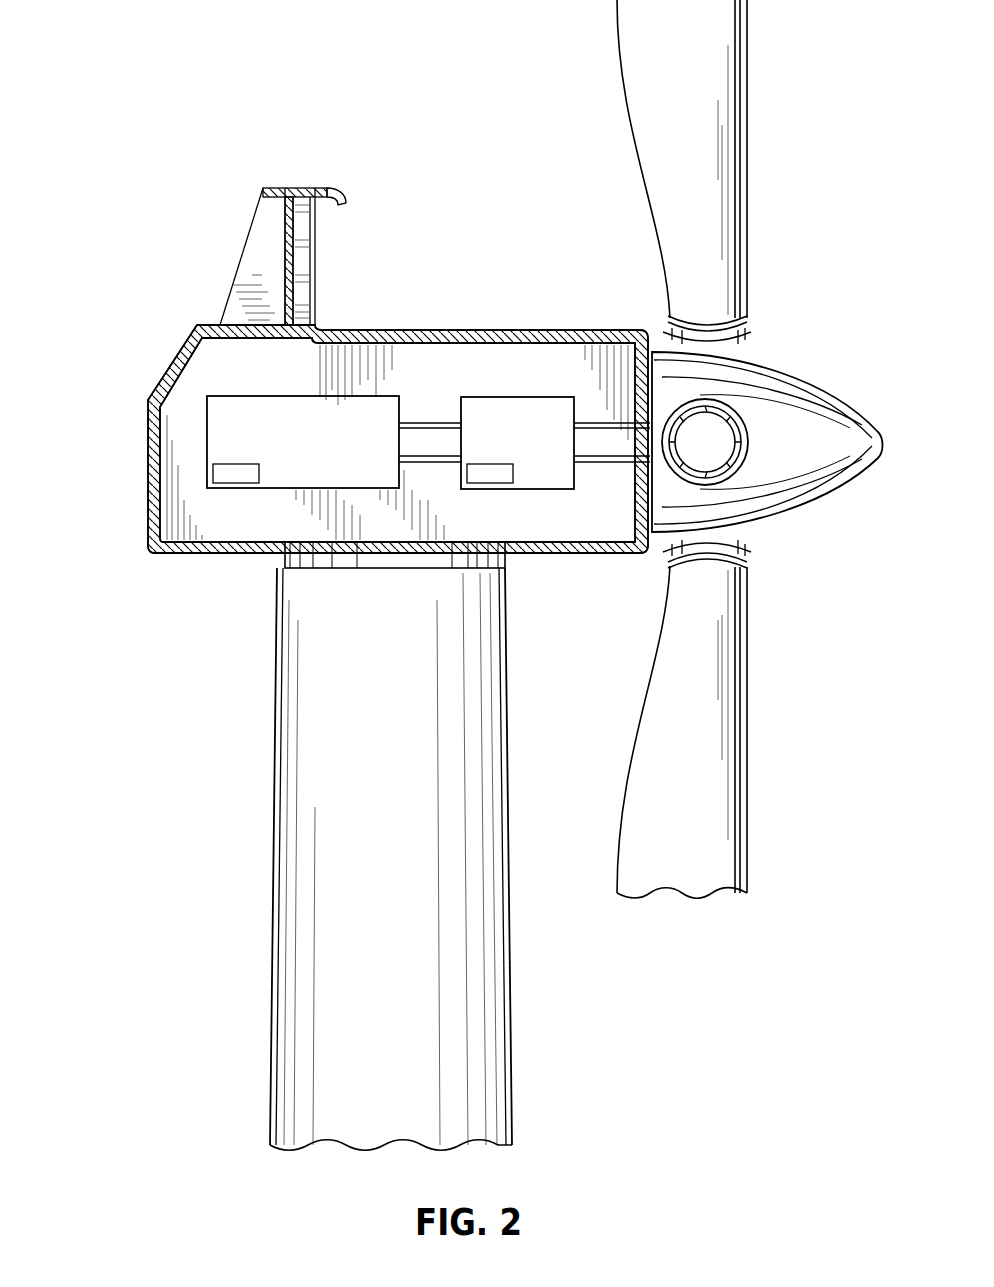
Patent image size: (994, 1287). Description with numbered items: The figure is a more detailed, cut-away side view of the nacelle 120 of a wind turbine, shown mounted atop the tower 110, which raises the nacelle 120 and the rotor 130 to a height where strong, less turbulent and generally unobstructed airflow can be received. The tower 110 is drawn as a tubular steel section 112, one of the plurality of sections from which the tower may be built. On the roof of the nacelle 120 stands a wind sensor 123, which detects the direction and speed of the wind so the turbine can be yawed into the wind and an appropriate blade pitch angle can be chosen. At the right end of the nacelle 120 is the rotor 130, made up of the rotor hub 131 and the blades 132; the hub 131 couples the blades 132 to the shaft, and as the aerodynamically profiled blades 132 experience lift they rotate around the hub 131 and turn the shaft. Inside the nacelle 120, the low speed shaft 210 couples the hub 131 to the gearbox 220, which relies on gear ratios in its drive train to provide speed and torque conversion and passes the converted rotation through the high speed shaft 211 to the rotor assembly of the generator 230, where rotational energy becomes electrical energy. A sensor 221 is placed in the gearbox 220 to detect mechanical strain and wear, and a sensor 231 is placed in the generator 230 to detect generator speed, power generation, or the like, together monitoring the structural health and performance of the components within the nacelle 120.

The tower 110 is at (359, 846).
The tubular steel section 112 is at (273, 765).
The nacelle 120 is at (122, 407).
The wind sensor 123 is at (272, 187).
The rotor 130 is at (770, 449).
The rotor hub 131 is at (806, 376).
The blade 132 is at (748, 163).
The low speed shaft 210 is at (603, 464).
The high speed shaft 211 is at (424, 422).
The gearbox 220 is at (538, 396).
The sensor 221 is at (488, 484).
The generator 230 is at (290, 395).
The sensor 231 is at (234, 484).